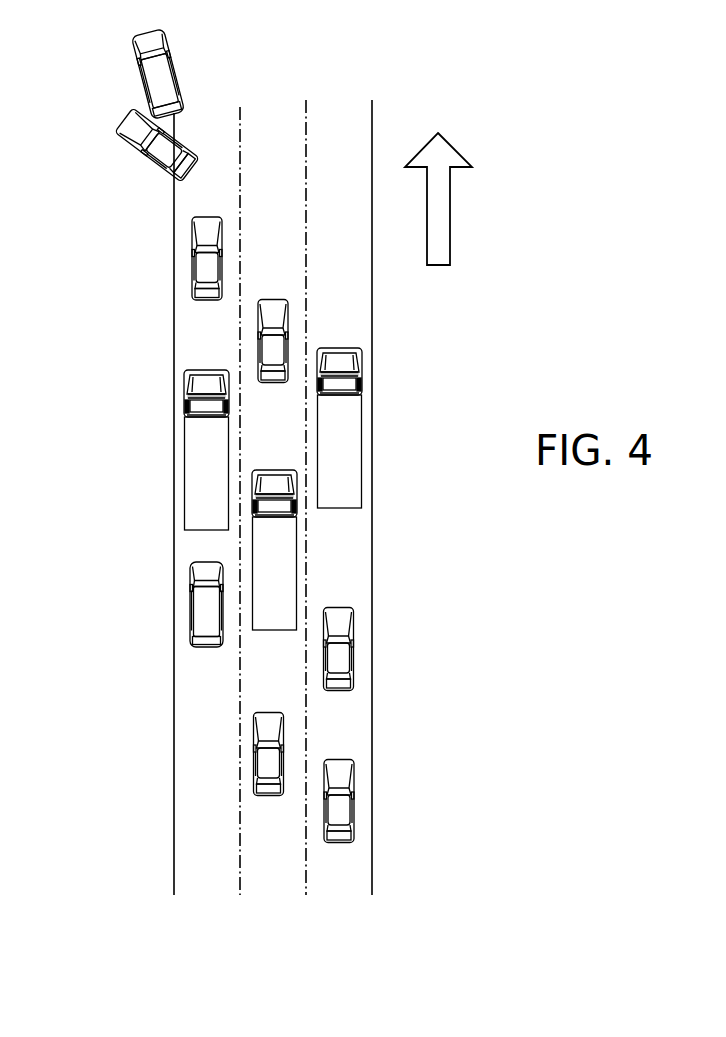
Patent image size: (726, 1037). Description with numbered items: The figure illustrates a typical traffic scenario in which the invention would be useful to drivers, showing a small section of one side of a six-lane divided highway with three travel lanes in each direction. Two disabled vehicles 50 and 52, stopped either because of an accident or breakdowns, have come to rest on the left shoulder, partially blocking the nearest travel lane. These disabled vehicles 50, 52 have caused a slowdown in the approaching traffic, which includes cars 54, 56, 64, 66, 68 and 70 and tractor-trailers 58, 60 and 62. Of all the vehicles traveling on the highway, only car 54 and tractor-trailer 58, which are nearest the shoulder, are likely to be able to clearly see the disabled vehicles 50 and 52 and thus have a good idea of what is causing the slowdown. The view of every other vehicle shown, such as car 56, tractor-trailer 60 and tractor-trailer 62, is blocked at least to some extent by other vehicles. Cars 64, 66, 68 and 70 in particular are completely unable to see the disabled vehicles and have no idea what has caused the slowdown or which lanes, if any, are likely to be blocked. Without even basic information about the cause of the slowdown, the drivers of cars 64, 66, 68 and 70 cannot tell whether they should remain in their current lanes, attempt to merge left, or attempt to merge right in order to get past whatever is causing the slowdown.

The disabled vehicle 50 is at (140, 63).
The disabled vehicle 52 is at (125, 126).
The car 54 is at (193, 253).
The car 56 is at (259, 337).
The tractor-trailer 58 is at (184, 462).
The tractor-trailer 60 is at (358, 388).
The tractor-trailer 62 is at (288, 562).
The car 64 is at (185, 607).
The car 66 is at (352, 622).
The car 68 is at (258, 750).
The car 70 is at (360, 788).